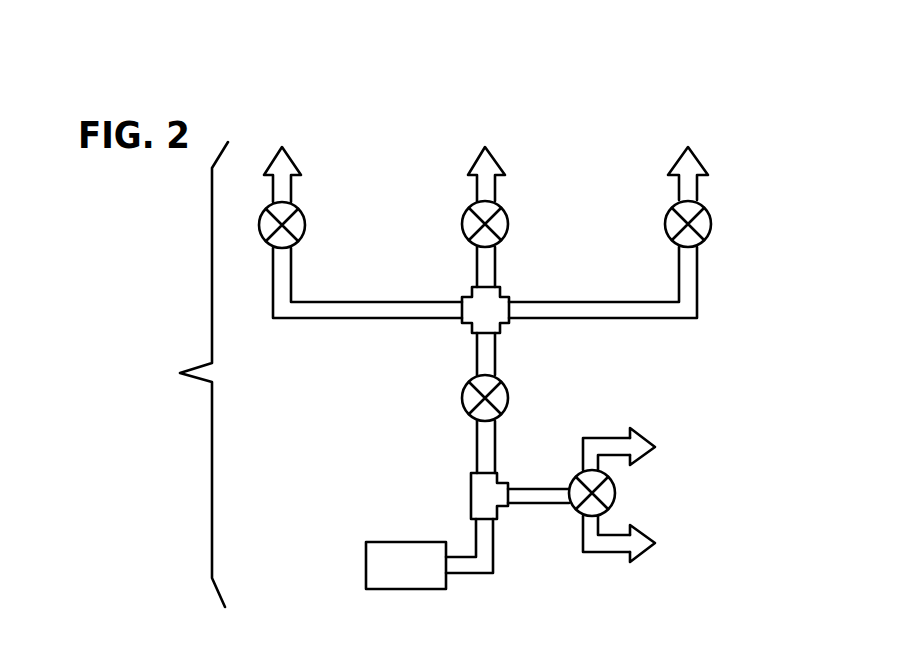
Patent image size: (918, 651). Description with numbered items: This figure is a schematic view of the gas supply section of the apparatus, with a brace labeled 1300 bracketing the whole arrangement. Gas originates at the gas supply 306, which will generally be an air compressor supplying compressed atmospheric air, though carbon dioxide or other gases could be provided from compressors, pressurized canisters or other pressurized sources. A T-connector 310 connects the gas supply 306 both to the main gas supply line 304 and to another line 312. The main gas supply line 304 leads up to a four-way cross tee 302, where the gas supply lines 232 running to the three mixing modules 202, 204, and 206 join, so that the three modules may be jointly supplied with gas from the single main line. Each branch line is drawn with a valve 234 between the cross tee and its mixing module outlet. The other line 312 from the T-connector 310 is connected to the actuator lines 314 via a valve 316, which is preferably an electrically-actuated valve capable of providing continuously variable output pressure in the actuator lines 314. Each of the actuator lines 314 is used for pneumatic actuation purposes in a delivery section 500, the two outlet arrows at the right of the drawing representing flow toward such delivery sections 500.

The gas delivery system 1300 is at (157, 374).
The mixing module 202 is at (298, 142).
The mixing module 204 is at (498, 142).
The mixing module 206 is at (701, 142).
The valve 234 is at (306, 225).
The gas supply line 232 is at (292, 288).
The 4-way cross tee 302 is at (468, 327).
The main gas supply line 304 is at (496, 359).
The T-connector 310 is at (469, 498).
The line 312 is at (532, 504).
The valve 316 is at (616, 497).
The actuator lines 314 is at (603, 437).
The delivery section 500 is at (675, 495).
The gas supply 306 is at (395, 590).